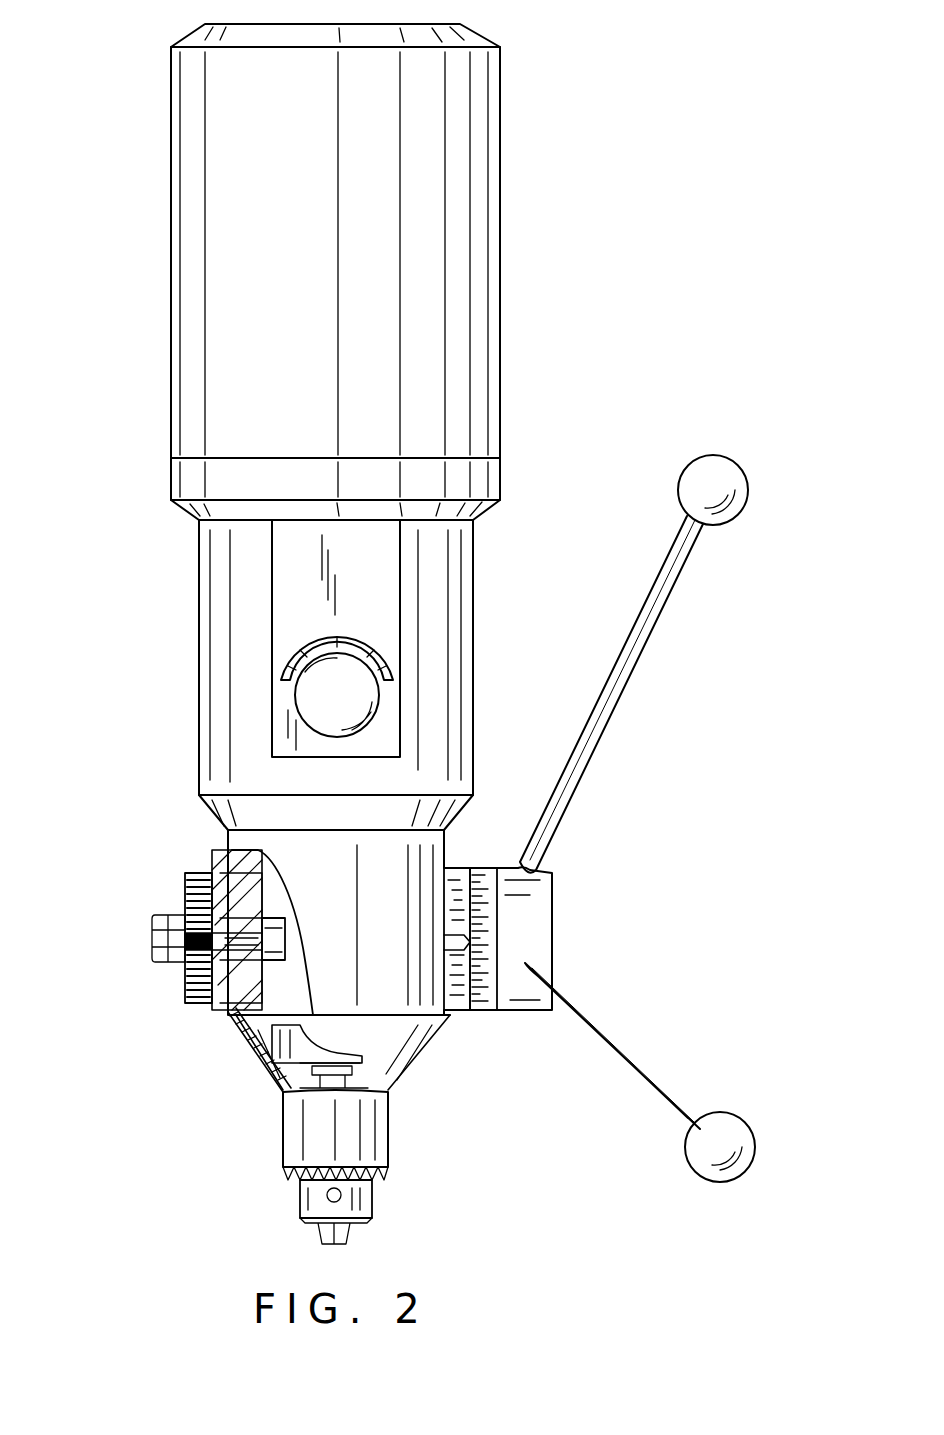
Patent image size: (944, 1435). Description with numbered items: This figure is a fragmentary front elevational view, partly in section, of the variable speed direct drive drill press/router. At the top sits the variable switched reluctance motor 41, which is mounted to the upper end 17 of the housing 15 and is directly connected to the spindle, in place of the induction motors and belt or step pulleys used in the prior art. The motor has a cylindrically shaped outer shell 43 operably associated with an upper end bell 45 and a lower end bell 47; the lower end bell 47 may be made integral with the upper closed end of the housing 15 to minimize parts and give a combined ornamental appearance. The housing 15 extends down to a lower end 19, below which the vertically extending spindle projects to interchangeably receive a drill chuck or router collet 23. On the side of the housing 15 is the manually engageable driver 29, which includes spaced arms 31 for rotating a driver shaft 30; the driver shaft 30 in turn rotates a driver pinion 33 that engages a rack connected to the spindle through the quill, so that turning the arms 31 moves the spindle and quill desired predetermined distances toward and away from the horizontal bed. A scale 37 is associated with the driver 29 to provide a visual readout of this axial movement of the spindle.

The variable switched reluctance motor 41 is at (162, 268).
The cylindrically shaped outer shell 43 is at (253, 343).
The upper end bell 45 is at (220, 30).
The lower end bell 47 is at (212, 486).
The upper end 17 is at (222, 548).
The housing 15 is at (242, 742).
The driver pinion 33 is at (200, 873).
The driver shaft 30 is at (233, 1002).
The lower end 19 is at (256, 1052).
The drill chuck or router collet 23 is at (300, 1128).
The scale 37 is at (470, 1012).
The driver 29 is at (530, 915).
The spaced arms 31 is at (665, 622).